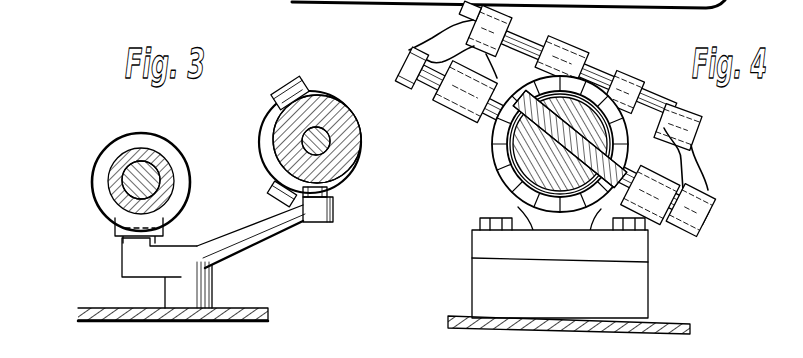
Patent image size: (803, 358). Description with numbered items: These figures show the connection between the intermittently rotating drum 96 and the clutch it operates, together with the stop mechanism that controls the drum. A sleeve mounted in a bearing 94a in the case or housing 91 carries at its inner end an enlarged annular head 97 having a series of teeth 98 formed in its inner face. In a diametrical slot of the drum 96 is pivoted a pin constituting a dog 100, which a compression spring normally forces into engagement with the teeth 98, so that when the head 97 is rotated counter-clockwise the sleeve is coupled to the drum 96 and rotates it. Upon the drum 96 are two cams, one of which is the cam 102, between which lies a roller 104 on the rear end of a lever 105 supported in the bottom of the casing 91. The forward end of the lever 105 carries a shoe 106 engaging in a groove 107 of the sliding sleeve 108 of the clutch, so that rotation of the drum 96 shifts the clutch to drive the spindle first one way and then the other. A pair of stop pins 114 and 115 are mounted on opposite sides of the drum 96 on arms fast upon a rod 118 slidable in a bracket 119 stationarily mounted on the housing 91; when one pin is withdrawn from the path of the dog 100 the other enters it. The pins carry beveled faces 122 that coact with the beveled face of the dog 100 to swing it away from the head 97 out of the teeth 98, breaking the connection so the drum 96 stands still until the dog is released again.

In FIG. 3, the case or housing 91 is at (235, 316).
In FIG. 4, the bearing 94a is at (533, 248).
In FIG. 3, the drum 96 is at (327, 105).
In FIG. 4, the head 97 is at (573, 228).
In FIG. 4, the series of teeth 98 is at (580, 62).
In FIG. 4, the dog 100 is at (500, 174).
In FIG. 3, the cam 102 is at (303, 88).
In FIG. 3, the roller 104 is at (334, 195).
In FIG. 3, the lever 105 is at (262, 235).
In FIG. 3, the shoe 106 is at (125, 231).
In FIG. 3, the groove 107 is at (167, 152).
In FIG. 3, the sliding sleeve 108 is at (128, 153).
In FIG. 4, the stop pin 114 is at (640, 184).
In FIG. 4, the stop pin 115 is at (484, 130).
In FIG. 4, the rod 118 is at (520, 46).
In FIG. 4, the bracket 119 is at (633, 92).
In FIG. 4, the beveled faces 122 is at (700, 126).